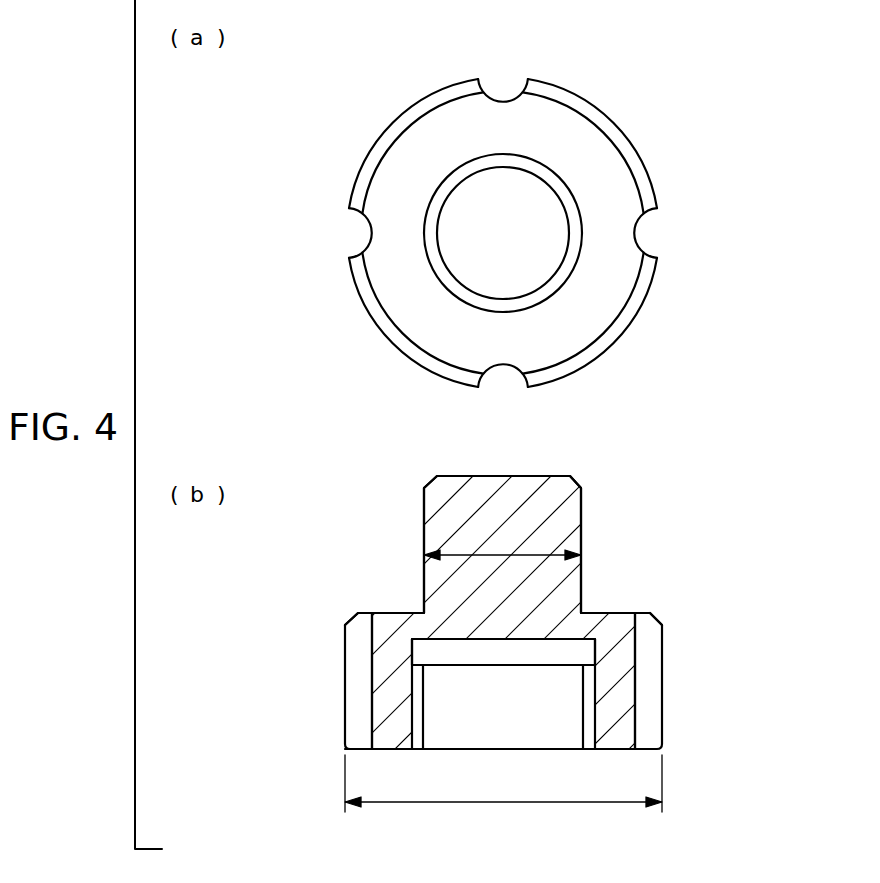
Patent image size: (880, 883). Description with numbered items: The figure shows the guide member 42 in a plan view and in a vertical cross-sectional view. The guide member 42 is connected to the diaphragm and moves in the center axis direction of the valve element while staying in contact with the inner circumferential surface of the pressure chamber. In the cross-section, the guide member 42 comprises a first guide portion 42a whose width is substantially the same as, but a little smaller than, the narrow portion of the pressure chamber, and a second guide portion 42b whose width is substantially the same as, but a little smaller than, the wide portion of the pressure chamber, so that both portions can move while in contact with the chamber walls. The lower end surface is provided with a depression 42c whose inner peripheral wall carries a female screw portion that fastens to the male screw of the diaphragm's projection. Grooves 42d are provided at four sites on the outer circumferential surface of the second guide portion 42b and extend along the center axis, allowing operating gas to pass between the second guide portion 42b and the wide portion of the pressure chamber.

The guide member 42 is at (665, 305).
The first guide portion 42a is at (571, 528).
The second guide portion 42b is at (613, 612).
The depression 42c is at (567, 682).
The grooves 42d is at (503, 90).